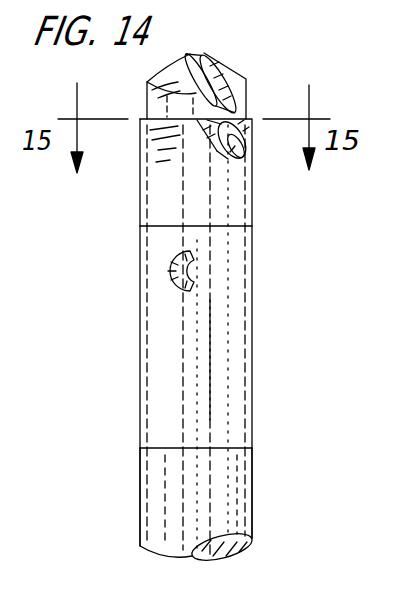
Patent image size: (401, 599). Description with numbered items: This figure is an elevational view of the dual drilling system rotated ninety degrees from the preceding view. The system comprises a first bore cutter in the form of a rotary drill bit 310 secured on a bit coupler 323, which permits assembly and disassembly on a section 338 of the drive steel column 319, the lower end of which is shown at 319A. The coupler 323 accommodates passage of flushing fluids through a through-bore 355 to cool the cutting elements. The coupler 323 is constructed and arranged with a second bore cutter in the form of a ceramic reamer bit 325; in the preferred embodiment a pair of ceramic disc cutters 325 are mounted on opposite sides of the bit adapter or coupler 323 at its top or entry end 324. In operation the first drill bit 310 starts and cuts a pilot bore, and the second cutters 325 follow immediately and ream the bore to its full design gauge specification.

The rotary drill bit 310 is at (246, 66).
The top or entry end 324 is at (248, 118).
The bit coupler 323 is at (266, 203).
The ceramic reamer bit 325 is at (216, 150).
The through-bore 355 is at (210, 362).
The section of drive steel column 338 is at (140, 455).
The drive steel column 319 is at (253, 496).
The angled end face 319A is at (258, 557).